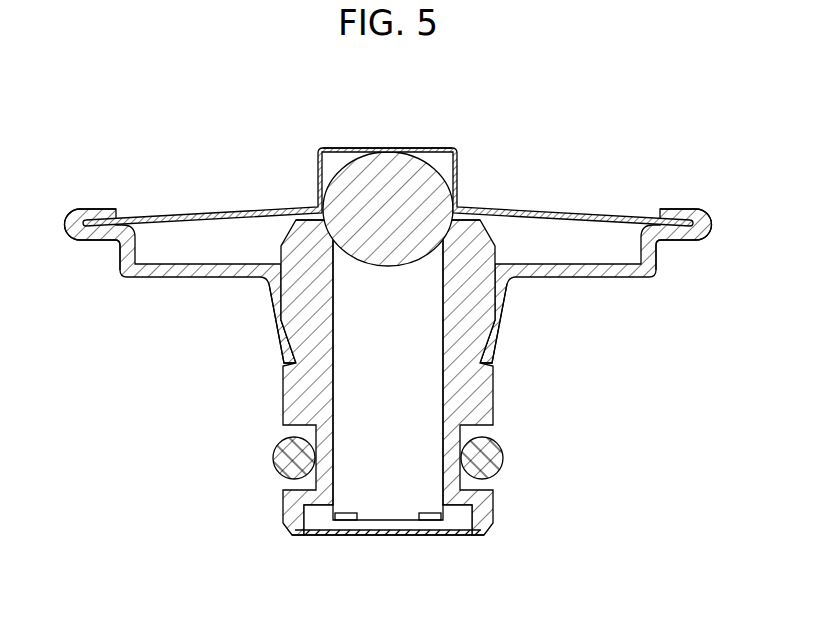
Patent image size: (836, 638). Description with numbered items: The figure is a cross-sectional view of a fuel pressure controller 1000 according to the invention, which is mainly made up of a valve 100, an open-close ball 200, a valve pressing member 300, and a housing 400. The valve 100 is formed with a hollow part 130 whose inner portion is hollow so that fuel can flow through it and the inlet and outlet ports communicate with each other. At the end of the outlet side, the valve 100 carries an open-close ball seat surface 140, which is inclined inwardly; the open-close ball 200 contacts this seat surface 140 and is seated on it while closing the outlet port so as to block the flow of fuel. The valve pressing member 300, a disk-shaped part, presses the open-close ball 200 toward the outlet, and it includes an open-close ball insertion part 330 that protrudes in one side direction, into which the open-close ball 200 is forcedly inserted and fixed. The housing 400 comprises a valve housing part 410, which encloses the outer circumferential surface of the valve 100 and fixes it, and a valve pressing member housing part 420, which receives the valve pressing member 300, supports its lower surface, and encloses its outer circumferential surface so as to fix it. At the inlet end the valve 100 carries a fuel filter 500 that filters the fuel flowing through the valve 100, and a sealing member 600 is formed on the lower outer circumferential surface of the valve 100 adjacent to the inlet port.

The fuel pressure controller 1000 is at (601, 103).
The valve 100 is at (485, 397).
The hollow part 130 is at (363, 408).
The open-close ball seat surface 140 is at (330, 226).
The open-close ball 200 is at (337, 182).
The valve pressing member 300 is at (543, 212).
The open-close ball insertion part 330 is at (422, 147).
The housing 400 is at (687, 334).
The valve housing part 410 is at (498, 335).
The valve pressing member housing part 420 is at (648, 257).
The fuel filter 500 is at (392, 525).
The sealing member 600 is at (491, 447).